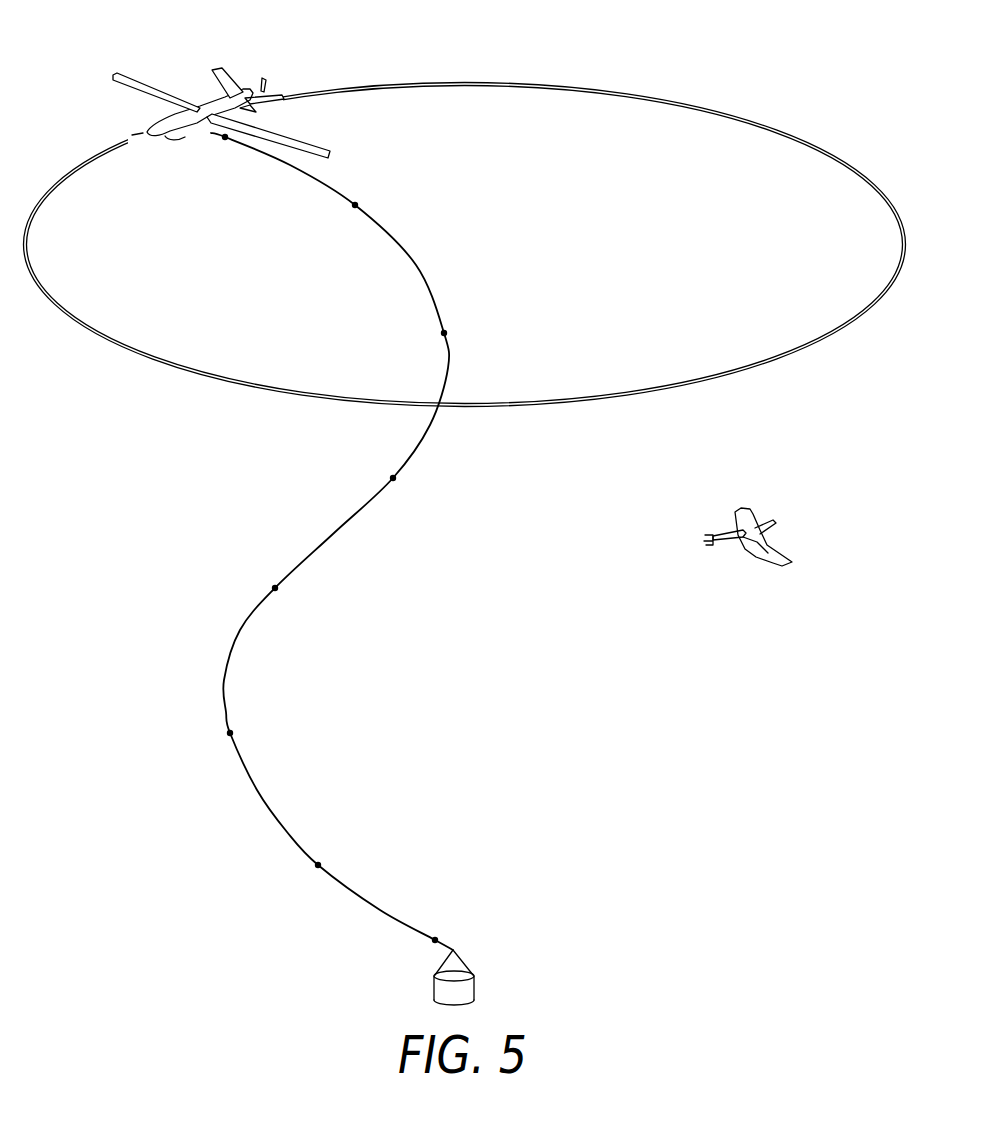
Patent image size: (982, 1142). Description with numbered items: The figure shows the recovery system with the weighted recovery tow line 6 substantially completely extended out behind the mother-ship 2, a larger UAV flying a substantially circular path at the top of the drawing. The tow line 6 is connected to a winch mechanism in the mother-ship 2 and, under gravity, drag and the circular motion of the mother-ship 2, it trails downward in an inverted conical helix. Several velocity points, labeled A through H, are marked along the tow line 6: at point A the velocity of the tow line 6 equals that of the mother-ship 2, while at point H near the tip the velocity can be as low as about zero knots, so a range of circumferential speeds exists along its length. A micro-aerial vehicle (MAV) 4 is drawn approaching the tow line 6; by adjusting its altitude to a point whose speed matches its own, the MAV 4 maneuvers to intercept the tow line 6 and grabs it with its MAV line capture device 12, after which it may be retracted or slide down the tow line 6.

The mother-ship 2 is at (198, 76).
The micro-aerial vehicle (MAV) 4 is at (778, 564).
The weighted recovery tow line 6 is at (224, 677).
The MAV line capture device 12 is at (709, 537).